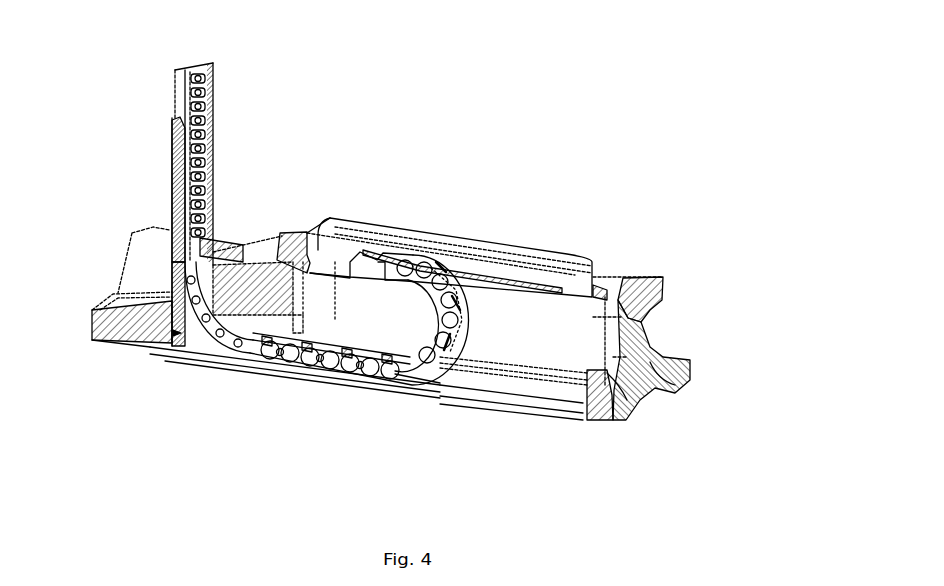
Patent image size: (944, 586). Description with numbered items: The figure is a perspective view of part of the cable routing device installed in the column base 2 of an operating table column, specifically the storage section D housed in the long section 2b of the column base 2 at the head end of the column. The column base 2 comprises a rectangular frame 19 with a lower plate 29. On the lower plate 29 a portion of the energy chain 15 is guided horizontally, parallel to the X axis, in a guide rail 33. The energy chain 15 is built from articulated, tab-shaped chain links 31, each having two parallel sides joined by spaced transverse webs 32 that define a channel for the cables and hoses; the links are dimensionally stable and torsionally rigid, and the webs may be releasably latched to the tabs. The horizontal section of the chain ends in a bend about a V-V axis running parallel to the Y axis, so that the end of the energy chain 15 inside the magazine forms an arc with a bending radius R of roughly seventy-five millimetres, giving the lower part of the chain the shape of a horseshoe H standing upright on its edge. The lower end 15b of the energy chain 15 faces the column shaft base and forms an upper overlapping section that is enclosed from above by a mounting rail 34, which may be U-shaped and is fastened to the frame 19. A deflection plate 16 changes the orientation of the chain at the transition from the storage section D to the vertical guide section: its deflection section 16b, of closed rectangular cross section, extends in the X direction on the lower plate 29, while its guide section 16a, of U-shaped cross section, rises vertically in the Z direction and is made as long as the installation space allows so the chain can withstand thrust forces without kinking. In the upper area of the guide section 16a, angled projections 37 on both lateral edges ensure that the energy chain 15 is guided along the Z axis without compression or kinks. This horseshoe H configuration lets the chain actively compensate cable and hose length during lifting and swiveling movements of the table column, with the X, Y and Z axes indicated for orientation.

The column base 2 is at (660, 345).
The long section of the column base 2b is at (600, 432).
The energy chain 15 is at (190, 63).
The lower end of the energy chain 15b is at (300, 240).
The deflection plate 16 is at (100, 309).
The guide section of the deflection plate 16a is at (172, 197).
The deflection section of the deflection plate 16b is at (163, 357).
The frame 19 is at (660, 283).
The lower plate 29 is at (527, 400).
The chain links 31 is at (403, 373).
The transverse webs 32 is at (213, 112).
The guide rail 33 is at (432, 378).
The mounting rail 34 is at (397, 237).
The angled projections 37 is at (172, 140).
The horseshoe H is at (473, 290).
The bending radius R is at (265, 355).
The V-V axis V is at (294, 350).
The storage section D is at (430, 418).
The X axis X is at (853, 470).
The Y axis Y is at (853, 470).
The Z axis Z is at (853, 470).